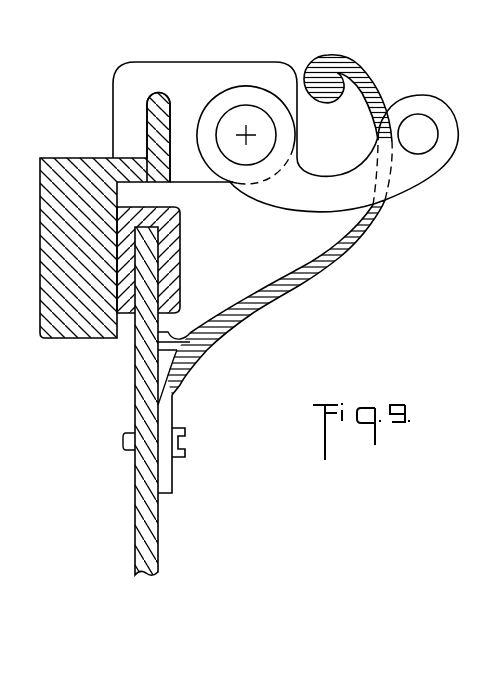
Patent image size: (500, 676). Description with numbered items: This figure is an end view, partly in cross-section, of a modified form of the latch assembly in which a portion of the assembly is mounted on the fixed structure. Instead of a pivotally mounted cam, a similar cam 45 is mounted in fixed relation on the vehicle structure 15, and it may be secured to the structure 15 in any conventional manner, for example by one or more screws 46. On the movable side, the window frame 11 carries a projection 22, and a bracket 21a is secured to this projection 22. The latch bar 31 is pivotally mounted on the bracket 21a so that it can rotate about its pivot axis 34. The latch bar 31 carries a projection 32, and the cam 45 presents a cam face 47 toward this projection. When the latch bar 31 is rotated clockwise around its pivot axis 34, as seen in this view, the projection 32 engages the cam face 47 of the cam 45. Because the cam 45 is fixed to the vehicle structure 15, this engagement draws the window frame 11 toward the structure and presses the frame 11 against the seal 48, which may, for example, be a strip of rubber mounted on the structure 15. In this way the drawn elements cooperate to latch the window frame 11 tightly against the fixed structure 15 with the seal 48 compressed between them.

The window frame 11 is at (73, 172).
The vehicle structure 15 is at (143, 398).
The bracket 21a is at (255, 62).
The projection 22 is at (161, 93).
The latch bar 31 is at (452, 115).
The projection 32 is at (432, 142).
The pivot axis 34 is at (240, 134).
The cam 45 is at (299, 290).
The screw 46 is at (186, 433).
The cam face 47 is at (378, 84).
The seal 48 is at (172, 252).